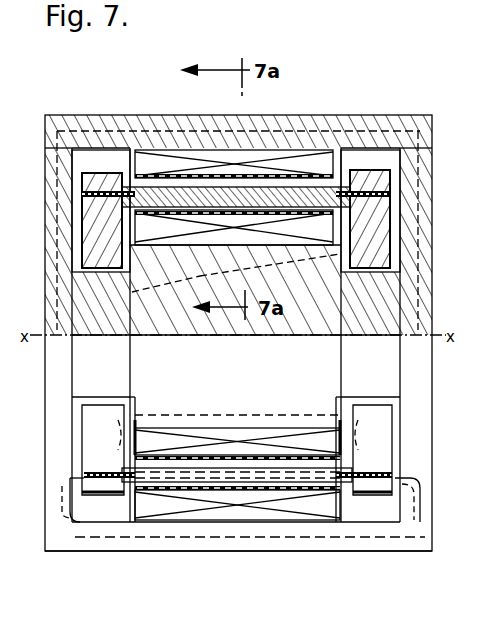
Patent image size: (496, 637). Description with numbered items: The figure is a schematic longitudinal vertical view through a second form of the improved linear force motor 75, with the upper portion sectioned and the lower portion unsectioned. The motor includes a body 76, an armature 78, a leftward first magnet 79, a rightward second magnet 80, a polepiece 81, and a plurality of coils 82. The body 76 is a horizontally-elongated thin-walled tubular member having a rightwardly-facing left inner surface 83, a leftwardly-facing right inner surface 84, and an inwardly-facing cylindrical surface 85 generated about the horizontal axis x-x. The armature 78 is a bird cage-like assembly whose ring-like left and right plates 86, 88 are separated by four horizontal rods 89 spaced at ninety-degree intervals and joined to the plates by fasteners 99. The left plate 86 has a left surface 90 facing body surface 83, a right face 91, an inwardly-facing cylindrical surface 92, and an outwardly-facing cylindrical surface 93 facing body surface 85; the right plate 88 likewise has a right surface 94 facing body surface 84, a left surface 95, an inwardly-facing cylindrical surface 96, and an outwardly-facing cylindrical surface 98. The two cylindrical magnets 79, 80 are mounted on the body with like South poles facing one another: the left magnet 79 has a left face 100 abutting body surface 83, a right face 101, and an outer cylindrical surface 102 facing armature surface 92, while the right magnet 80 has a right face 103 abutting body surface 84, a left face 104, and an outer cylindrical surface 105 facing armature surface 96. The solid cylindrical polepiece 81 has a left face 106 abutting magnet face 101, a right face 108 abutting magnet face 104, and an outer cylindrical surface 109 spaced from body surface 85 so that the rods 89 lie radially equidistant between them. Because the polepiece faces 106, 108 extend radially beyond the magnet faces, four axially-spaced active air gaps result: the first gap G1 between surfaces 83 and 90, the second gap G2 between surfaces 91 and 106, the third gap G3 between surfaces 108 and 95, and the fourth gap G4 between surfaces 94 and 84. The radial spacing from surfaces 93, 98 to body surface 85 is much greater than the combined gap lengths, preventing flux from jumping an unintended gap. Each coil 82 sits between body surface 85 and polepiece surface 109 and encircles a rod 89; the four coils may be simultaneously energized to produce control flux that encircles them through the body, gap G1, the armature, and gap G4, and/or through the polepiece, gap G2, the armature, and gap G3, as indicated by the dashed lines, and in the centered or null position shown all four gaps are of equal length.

The force motor 75 is at (366, 90).
The body 76 is at (279, 552).
The armature 78 is at (198, 476).
The first magnet 79 is at (110, 362).
The second magnet 80 is at (387, 362).
The polepiece 81 is at (275, 362).
The coils 82 is at (263, 116).
The left inner surface 83 is at (76, 524).
The right inner surface 84 is at (390, 524).
The cylindrical surface 85 is at (108, 526).
The left plate 86 is at (84, 454).
The right plate 88 is at (390, 444).
The rods 89 is at (282, 450).
The left surface 90 is at (80, 425).
The right face 91 is at (134, 402).
The inwardly-facing cylindrical surface 92 is at (98, 404).
The outwardly-facing cylindrical surface 93 is at (70, 504).
The right surface 94 is at (410, 424).
The left surface 95 is at (340, 404).
The inwardly-facing cylindrical surface 96 is at (382, 400).
The outwardly-facing cylindrical surface 98 is at (412, 496).
The fasteners 99 is at (75, 474).
The left face 100 is at (72, 360).
The right face 101 is at (134, 376).
The outwardly-facing cylindrical surface 102 is at (80, 404).
The right face 103 is at (412, 366).
The left face 104 is at (318, 378).
The outwardly-facing cylindrical surface 105 is at (410, 404).
The left face 106 is at (128, 354).
The right face 108 is at (316, 430).
The outwardly-facing cylindrical surface 109 is at (230, 432).
The first gap G1 is at (78, 233).
The second gap G2 is at (169, 268).
The third gap G3 is at (270, 260).
The fourth gap G4 is at (394, 226).